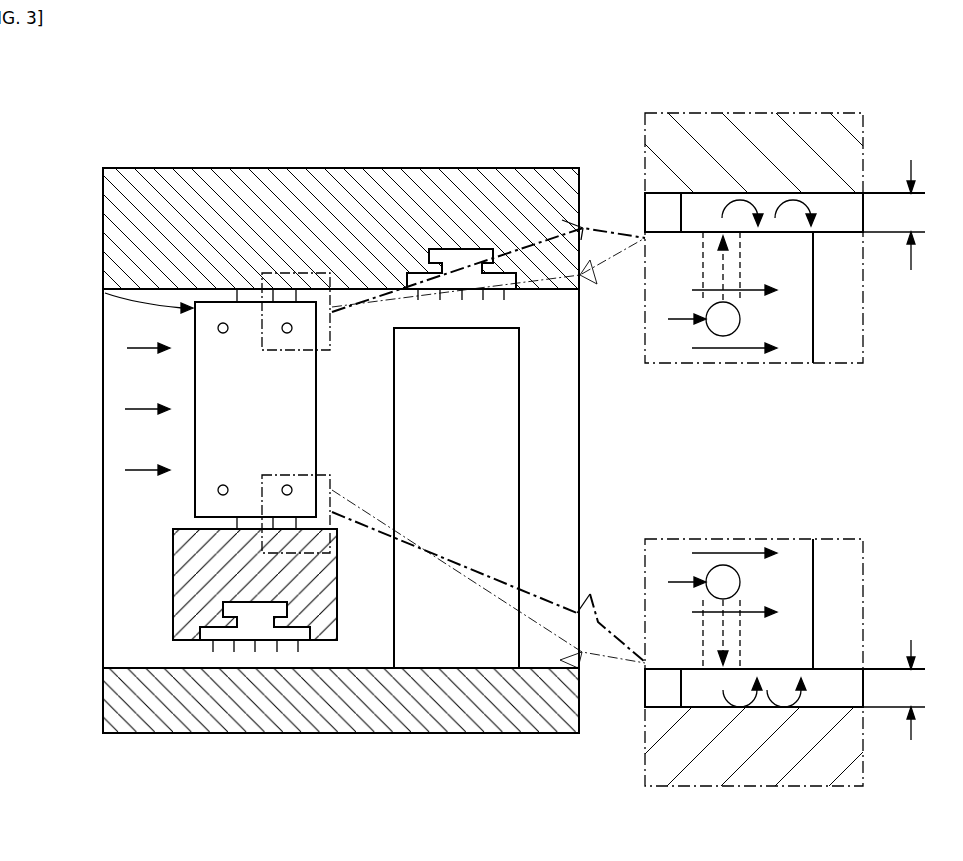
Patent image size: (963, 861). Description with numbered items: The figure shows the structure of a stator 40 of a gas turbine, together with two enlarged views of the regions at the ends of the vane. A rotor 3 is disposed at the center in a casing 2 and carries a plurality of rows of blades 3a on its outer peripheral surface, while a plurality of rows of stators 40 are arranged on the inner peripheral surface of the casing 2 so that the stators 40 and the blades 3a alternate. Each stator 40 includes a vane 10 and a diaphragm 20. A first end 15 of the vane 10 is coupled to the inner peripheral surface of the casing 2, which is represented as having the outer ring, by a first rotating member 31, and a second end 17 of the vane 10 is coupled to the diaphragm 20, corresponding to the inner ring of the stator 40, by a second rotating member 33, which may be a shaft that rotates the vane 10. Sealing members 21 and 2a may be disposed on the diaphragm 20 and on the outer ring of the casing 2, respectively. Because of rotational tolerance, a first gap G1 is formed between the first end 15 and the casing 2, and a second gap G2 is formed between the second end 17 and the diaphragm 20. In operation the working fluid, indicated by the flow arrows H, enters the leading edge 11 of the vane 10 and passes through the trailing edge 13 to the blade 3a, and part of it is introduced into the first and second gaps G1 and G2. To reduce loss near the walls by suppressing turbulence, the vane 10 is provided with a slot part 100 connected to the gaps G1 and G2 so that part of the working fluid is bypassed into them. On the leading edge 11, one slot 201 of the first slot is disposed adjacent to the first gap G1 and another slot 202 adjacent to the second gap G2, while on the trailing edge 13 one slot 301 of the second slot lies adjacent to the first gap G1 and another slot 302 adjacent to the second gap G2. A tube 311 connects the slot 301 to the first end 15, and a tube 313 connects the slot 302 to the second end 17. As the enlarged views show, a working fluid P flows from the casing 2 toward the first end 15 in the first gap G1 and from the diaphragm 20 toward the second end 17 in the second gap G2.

The slot part 100 is at (128, 289).
The casing 2 is at (150, 190).
The sealing member 2a is at (462, 258).
The rotor 3 is at (513, 710).
The blade 3a is at (450, 655).
The vane 10 is at (215, 386).
The leading edge 11 is at (195, 320).
The trailing edge 13 is at (331, 307).
The first end 15 is at (318, 318).
The second end 17 is at (292, 522).
The diaphragm 20 is at (200, 584).
The sealing member 21 is at (270, 632).
The first rotating member 31 is at (253, 293).
The second rotating member 33 is at (245, 523).
The stator 40 is at (152, 565).
The 1-1 slot 201 is at (223, 322).
The 1-2 slot 202 is at (217, 489).
The 2-1 slot 301 is at (287, 322).
The 2-2 slot 302 is at (284, 486).
The 2-1 tube 311 is at (740, 298).
The 2-2 tube 313 is at (740, 603).
The hot gas H is at (140, 347).
The working fluid P is at (782, 198).
The first gap G1 is at (921, 215).
The second gap G2 is at (921, 690).